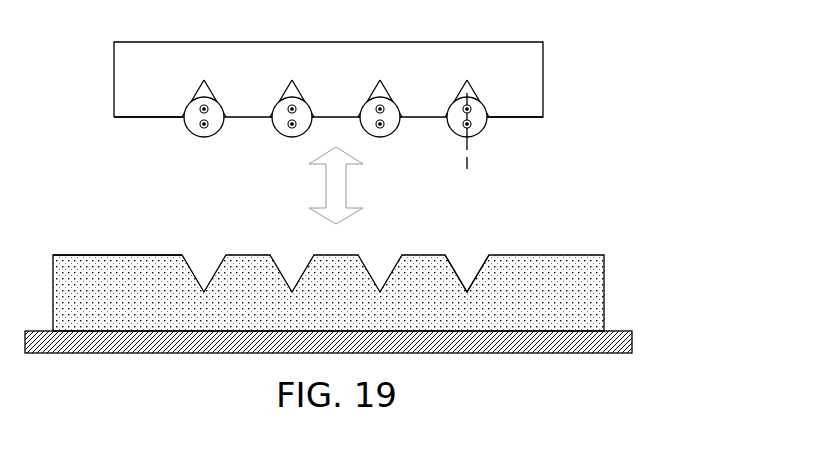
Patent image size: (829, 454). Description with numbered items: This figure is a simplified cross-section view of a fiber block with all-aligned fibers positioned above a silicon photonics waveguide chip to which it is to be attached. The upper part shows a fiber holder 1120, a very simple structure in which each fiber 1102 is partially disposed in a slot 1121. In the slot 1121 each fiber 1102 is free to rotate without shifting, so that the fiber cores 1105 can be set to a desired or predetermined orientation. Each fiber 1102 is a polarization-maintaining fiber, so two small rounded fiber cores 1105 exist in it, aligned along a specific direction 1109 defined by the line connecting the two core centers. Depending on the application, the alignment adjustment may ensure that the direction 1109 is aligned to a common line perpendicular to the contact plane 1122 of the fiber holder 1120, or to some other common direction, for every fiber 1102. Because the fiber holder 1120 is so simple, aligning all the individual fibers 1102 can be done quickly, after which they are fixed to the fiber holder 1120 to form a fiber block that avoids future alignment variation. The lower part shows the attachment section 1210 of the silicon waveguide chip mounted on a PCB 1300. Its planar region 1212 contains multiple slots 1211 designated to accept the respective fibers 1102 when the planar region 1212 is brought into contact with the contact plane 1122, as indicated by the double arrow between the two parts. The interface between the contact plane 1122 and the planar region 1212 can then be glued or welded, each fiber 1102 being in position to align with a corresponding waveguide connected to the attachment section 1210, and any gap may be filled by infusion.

The fiber holder 1120 is at (536, 46).
The slot 1121 is at (475, 93).
The contact plane 1122 is at (151, 119).
The fiber 1102 is at (480, 125).
The fiber core 1105 is at (469, 126).
The specific direction 1109 is at (466, 165).
The attachment section 1210 is at (528, 263).
The slot 1211 is at (452, 263).
The planar region 1212 is at (117, 254).
The PCB 1300 is at (630, 338).